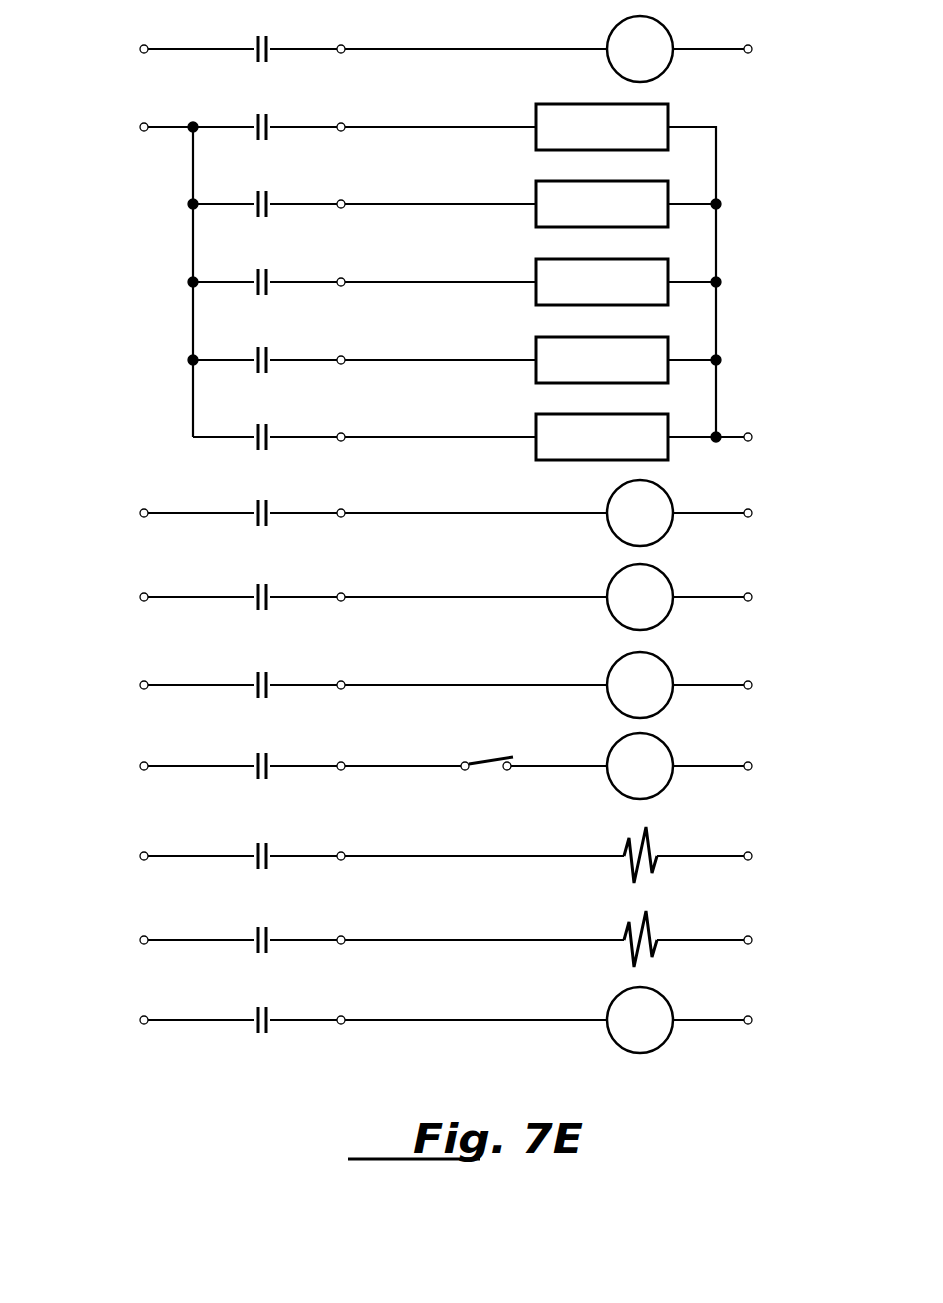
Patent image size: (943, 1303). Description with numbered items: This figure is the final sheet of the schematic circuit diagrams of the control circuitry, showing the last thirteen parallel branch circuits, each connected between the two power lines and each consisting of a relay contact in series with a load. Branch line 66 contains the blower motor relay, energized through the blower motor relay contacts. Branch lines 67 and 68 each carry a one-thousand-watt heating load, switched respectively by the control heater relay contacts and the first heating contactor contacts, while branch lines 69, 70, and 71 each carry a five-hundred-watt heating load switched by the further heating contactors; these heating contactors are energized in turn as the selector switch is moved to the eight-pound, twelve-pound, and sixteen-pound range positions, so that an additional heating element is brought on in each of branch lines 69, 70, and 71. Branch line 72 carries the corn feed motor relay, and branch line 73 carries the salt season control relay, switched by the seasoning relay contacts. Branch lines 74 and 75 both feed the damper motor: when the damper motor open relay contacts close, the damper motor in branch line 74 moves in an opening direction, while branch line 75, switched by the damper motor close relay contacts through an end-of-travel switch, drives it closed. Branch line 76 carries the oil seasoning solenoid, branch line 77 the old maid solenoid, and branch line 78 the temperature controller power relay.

The blower motor relay branch line 66 is at (423, 43).
The 1000W heating load branch line 67 is at (405, 260).
The 1000W heating load branch line 68 is at (408, 193).
The 500W heating load branch line 69 is at (408, 271).
The 500W heating load branch line 70 is at (408, 349).
The 500W heating load branch line 71 is at (423, 426).
The corn feed motor relay branch line 72 is at (423, 507).
The season control relay (salt) branch line 73 is at (423, 591).
The damper motor (open) branch line 74 is at (423, 679).
The damper motor (close) branch line 75 is at (423, 760).
The seasoning solenoid (oil) branch line 76 is at (423, 847).
The old maid solenoid branch line 77 is at (423, 931).
The temperature controller power relay branch line 78 is at (423, 1014).